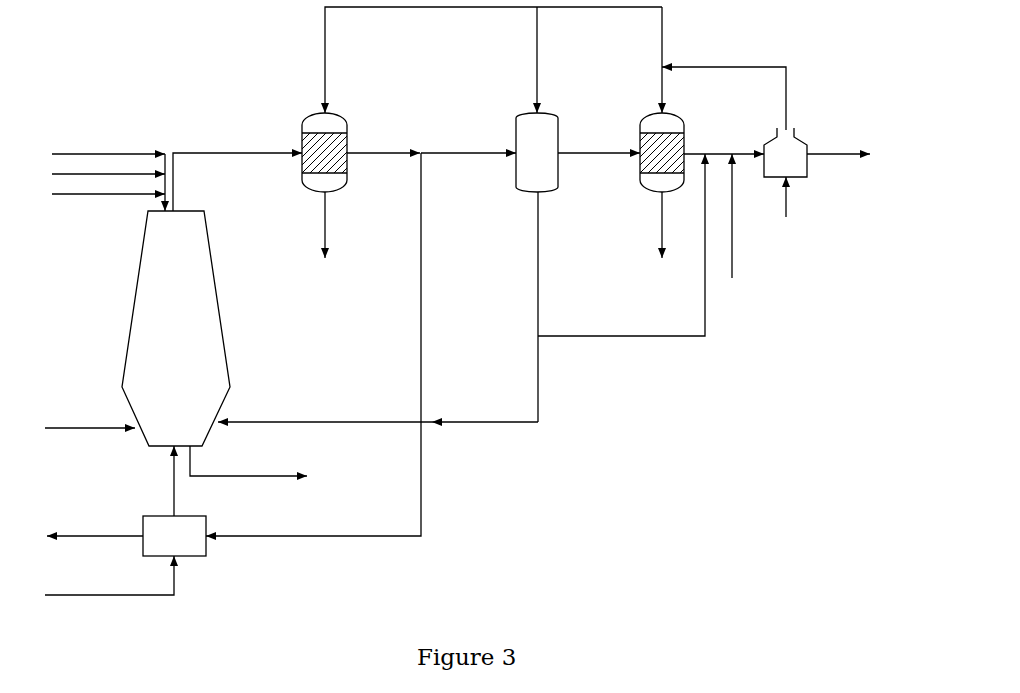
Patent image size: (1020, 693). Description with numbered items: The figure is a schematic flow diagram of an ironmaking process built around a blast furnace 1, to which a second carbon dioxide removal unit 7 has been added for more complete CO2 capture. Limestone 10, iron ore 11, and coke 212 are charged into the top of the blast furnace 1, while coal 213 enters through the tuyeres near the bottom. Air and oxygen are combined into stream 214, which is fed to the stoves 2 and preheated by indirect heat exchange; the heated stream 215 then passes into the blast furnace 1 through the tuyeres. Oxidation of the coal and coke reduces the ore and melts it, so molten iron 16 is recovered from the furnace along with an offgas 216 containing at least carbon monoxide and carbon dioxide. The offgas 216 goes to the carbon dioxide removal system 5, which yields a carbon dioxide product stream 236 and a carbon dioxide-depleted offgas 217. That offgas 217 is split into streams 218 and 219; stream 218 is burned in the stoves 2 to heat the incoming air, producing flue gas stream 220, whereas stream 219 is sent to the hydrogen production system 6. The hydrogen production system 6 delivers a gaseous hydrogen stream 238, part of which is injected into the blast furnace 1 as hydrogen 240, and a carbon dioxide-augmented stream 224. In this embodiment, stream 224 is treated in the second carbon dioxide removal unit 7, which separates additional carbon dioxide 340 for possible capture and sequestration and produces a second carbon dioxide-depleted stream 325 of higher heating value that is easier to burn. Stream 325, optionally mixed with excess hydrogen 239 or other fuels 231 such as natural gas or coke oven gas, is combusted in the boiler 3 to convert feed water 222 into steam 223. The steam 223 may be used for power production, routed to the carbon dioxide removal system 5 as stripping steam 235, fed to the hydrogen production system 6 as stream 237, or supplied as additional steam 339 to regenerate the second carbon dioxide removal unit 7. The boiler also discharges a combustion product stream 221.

The blast furnace 1 is at (176, 328).
The stoves 2 is at (174, 536).
The boiler 3 is at (785, 152).
The carbon dioxide removal system 5 is at (326, 150).
The hydrogen production system 6 is at (547, 150).
The second carbon dioxide removal unit 7 is at (664, 152).
The limestone 10 is at (108, 174).
The iron ore 11 is at (108, 166).
The molten iron 16 is at (248, 461).
The coke 212 is at (108, 186).
The coal 213 is at (90, 416).
The air and oxygen stream 214 is at (109, 575).
The heated stream 215 is at (154, 481).
The offgas 216 is at (237, 173).
The carbon dioxide-depleted offgas 217 is at (383, 145).
The stove fuel stream 218 is at (332, 344).
The hydrogen production feed stream 219 is at (468, 145).
The flue gas stream 220 is at (95, 525).
The product outlet stream 221 is at (838, 143).
The feed water 222 is at (808, 197).
The steam 223 is at (746, 98).
The carbon dioxide-augmented stream 224 is at (599, 145).
The other fuels 231 is at (733, 227).
The stripping steam stream 235 is at (493, 60).
The carbon dioxide product stream 236 is at (305, 225).
The hydrogen production steam stream 237 is at (518, 60).
The gaseous hydrogen stream 238 is at (519, 307).
The excess hydrogen 239 is at (621, 245).
The hydrogen injection stream 240 is at (378, 411).
The second carbon dioxide-depleted stream 325 is at (724, 146).
The additional steam 339 is at (643, 60).
The additional carbon dioxide 340 is at (642, 225).